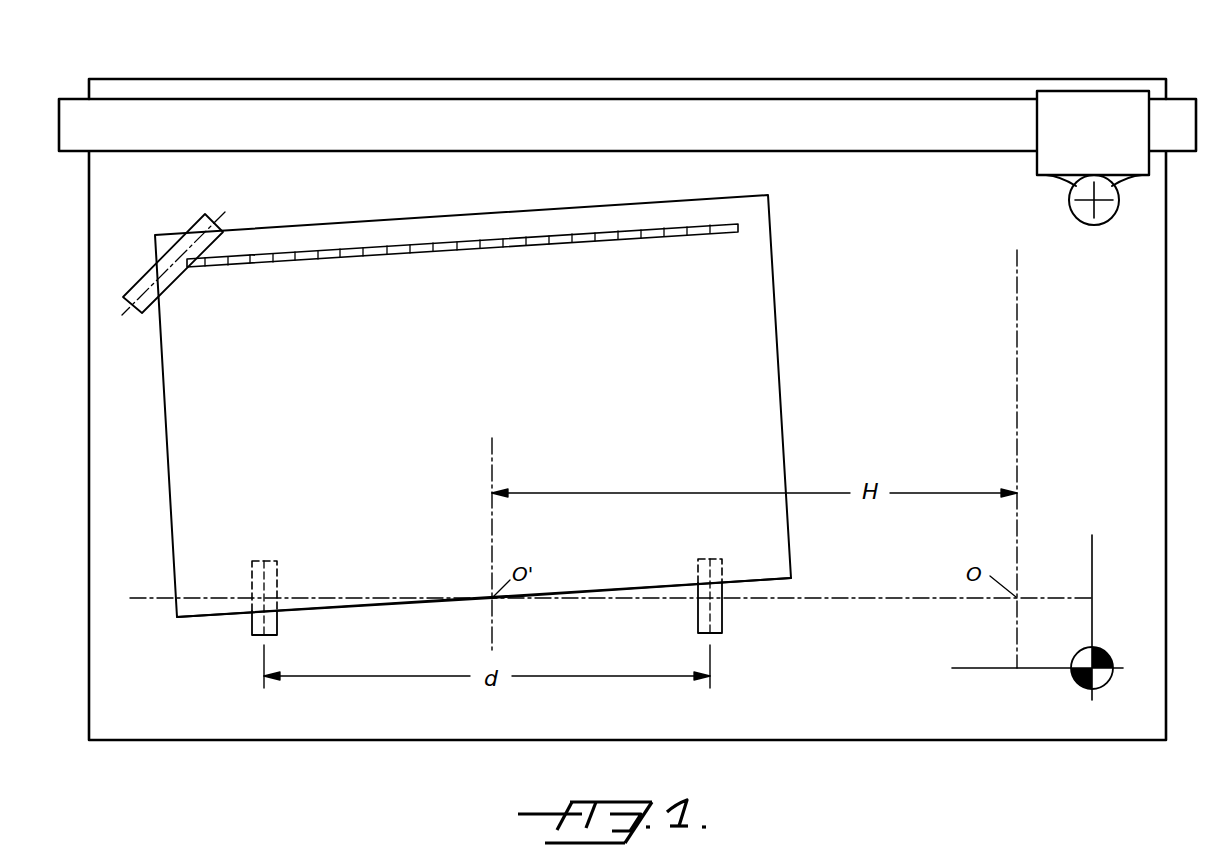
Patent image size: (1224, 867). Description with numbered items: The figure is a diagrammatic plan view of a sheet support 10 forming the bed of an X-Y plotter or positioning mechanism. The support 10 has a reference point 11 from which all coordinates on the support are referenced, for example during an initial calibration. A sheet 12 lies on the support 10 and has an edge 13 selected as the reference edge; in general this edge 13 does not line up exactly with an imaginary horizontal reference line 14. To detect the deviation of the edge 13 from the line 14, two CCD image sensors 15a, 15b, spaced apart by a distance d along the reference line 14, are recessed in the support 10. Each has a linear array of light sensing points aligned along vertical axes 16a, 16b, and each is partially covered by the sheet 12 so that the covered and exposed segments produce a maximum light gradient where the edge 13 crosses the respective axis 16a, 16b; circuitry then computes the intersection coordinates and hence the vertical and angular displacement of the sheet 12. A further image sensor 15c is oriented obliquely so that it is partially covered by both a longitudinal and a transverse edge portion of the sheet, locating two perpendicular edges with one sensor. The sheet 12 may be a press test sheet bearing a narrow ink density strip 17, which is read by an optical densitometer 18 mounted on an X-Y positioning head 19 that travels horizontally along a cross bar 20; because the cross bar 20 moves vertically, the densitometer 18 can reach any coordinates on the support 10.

The sheet support 10 is at (1166, 297).
The reference point 11 is at (1108, 678).
The sheet 12 is at (772, 281).
The edge 13 is at (378, 606).
The reference line 14 is at (628, 602).
The image sensor 15a is at (276, 572).
The image sensor 15b is at (697, 566).
The image sensor 15c is at (197, 217).
The axis 16a is at (262, 657).
The axis 16b is at (712, 652).
The ink density strip 17 is at (712, 227).
The optical densitometer 18 is at (1103, 219).
The X-Y positioning head 19 is at (1143, 164).
The cross bar 20 is at (940, 108).